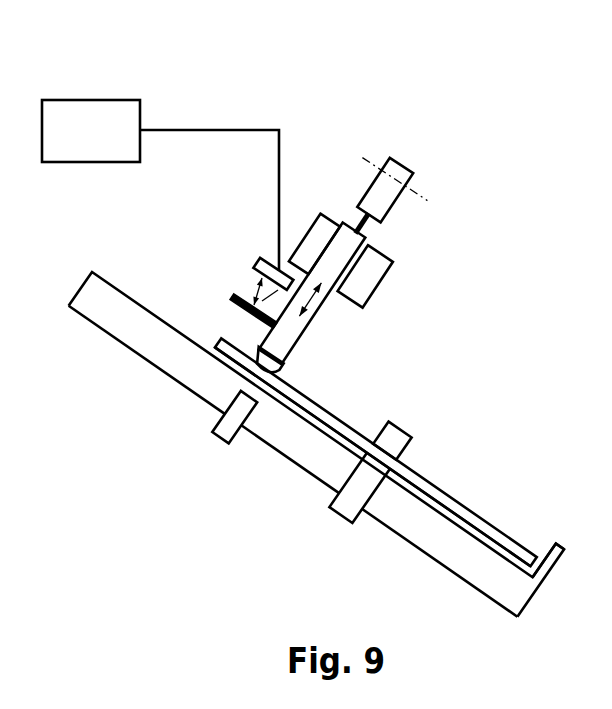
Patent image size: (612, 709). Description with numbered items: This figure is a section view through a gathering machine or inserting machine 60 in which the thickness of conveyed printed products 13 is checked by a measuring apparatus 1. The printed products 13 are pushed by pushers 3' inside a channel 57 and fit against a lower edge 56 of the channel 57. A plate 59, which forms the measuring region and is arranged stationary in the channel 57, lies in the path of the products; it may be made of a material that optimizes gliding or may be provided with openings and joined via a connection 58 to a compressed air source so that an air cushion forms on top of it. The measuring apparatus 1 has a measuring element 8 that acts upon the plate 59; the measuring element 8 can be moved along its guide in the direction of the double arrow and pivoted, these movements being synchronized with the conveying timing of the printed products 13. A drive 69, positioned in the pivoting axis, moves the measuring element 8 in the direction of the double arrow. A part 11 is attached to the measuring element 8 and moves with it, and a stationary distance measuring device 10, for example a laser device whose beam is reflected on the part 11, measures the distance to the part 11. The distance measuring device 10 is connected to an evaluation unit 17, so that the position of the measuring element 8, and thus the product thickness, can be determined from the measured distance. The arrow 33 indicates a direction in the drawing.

The measuring apparatus 1 is at (327, 178).
The evaluation unit 17 is at (95, 122).
The drive 69 is at (375, 193).
The measuring element 8 is at (350, 247).
The distance measuring device 10 is at (257, 267).
The part 11 is at (233, 297).
The plate 59 is at (230, 376).
The lower edge 56 is at (545, 544).
The printed products 13 is at (312, 400).
The channel 57 is at (422, 496).
The connection 58 is at (233, 421).
The feed direction arrow 33 is at (213, 448).
The pushers 3' is at (422, 398).
The gathering machine or inserting machine 60 is at (455, 292).